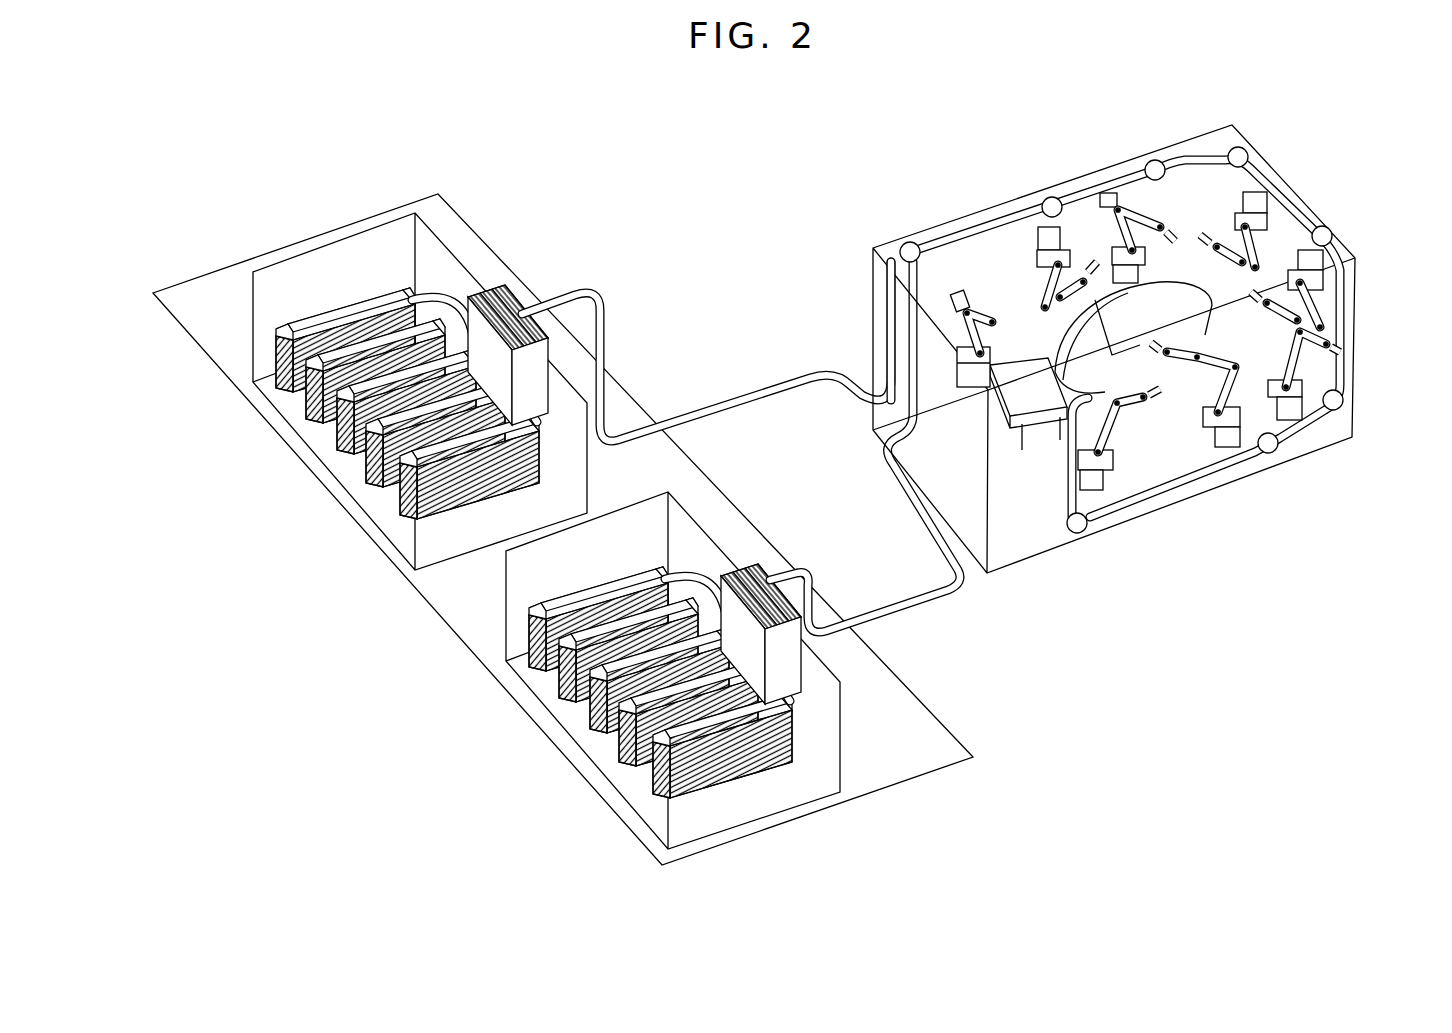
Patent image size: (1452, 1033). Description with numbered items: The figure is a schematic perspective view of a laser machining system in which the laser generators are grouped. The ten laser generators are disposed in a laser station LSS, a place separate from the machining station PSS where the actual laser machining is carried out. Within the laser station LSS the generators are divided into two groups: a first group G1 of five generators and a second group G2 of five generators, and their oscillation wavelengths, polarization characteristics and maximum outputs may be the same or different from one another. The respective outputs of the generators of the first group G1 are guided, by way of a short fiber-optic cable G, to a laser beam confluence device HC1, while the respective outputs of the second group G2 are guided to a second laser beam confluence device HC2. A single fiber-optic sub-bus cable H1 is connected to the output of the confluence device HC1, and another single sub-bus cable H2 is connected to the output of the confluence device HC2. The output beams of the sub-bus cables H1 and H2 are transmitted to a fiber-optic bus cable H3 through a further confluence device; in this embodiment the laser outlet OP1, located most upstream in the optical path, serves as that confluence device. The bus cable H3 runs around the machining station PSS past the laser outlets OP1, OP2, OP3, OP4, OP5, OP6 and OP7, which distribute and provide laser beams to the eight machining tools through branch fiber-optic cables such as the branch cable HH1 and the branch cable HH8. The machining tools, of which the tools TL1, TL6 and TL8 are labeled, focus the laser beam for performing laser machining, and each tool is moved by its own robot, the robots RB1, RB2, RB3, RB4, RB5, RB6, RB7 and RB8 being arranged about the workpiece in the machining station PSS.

The laser station LSS is at (790, 860).
The first group of laser generators G1 is at (282, 561).
The second group of laser generators G2 is at (618, 659).
The laser beam confluence device HC1 is at (508, 292).
The laser beam confluence device HC2 is at (774, 587).
The short fiber-optic cable G is at (727, 592).
The fiber-optic cable (sub-bus cable) H1 is at (724, 415).
The fiber-optic cable (sub-bus cable) H2 is at (910, 603).
The fiber-optic cable (bus cable) H3 is at (980, 226).
The branch fiber-optic cable HH1 is at (873, 274).
The branch fiber-optic cable HH8 is at (1063, 495).
The machining station PSS is at (1141, 582).
The laser outlet OP1 is at (908, 241).
The laser outlet OP2 is at (1052, 196).
The laser outlet OP3 is at (1160, 160).
The laser outlet OP4 is at (1250, 150).
The laser outlet OP5 is at (1333, 236).
The laser outlet OP6 is at (1344, 403).
The laser outlet OP7 is at (1270, 455).
The robot RB1 is at (967, 382).
The robot RB2 is at (1036, 240).
The robot RB3 is at (1115, 193).
The robot RB4 is at (1265, 198).
The robot RB5 is at (1322, 270).
The robot RB6 is at (1303, 418).
The robot RB7 is at (1230, 440).
The robot RB8 is at (1098, 480).
The machining tool TL1 is at (945, 330).
The machining tool TL6 is at (1191, 259).
The machining tool TL8 is at (1152, 435).